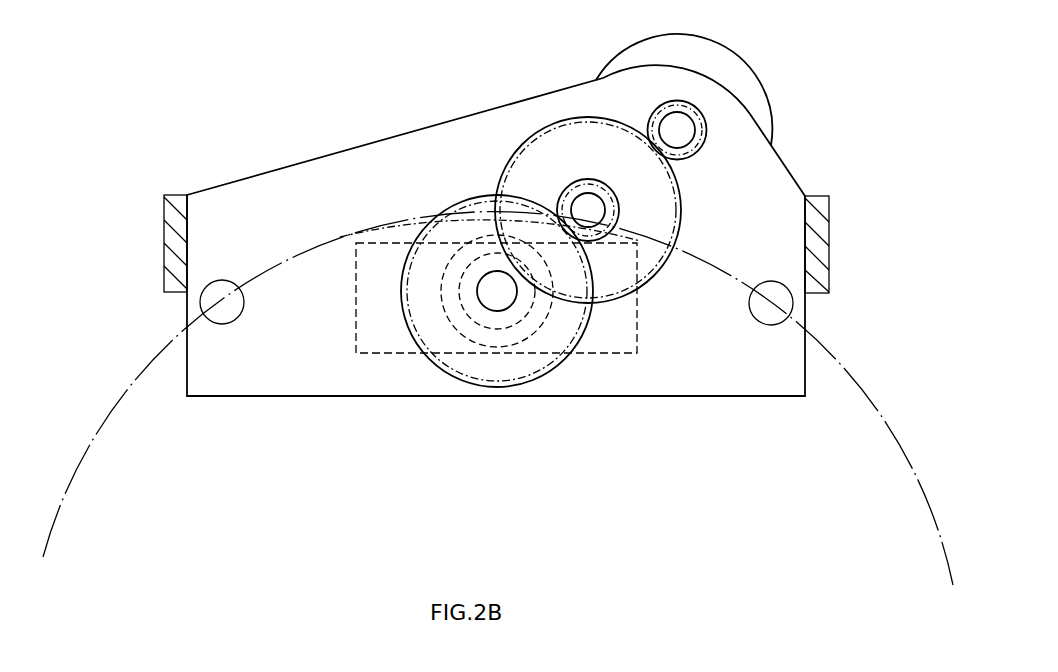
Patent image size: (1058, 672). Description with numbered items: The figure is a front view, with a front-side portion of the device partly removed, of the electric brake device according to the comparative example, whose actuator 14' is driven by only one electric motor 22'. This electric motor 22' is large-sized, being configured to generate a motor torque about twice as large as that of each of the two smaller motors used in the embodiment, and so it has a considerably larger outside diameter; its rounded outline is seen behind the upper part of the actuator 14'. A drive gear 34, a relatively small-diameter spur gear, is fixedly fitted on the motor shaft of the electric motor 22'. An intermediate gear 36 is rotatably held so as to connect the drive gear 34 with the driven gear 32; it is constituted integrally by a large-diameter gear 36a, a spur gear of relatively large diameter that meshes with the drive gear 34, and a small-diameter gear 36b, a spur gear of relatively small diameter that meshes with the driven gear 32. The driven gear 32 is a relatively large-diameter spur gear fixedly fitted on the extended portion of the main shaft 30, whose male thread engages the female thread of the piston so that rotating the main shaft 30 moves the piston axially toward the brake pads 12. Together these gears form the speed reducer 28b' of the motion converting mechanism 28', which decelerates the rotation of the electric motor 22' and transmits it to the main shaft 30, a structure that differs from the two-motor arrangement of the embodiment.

The brake pad 12 is at (365, 337).
The actuator 14' is at (498, 398).
The electric motor 22' is at (711, 89).
The motion converting mechanism 28' is at (557, 335).
The speed reducer 28b' is at (557, 328).
The main shaft 30 is at (490, 307).
The driven gear 32 is at (512, 368).
The drive gear 34 is at (706, 122).
The intermediate gear 36 is at (634, 252).
The large-diameter gear 36a is at (672, 217).
The small-diameter gear 36b is at (603, 225).